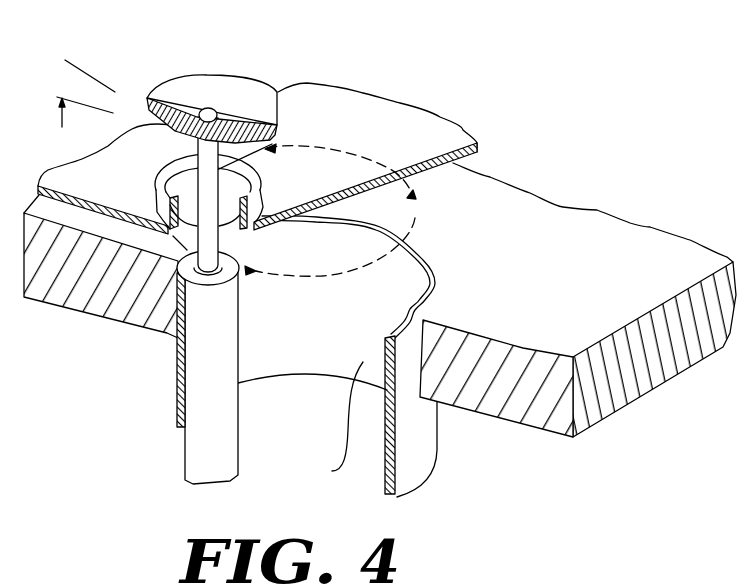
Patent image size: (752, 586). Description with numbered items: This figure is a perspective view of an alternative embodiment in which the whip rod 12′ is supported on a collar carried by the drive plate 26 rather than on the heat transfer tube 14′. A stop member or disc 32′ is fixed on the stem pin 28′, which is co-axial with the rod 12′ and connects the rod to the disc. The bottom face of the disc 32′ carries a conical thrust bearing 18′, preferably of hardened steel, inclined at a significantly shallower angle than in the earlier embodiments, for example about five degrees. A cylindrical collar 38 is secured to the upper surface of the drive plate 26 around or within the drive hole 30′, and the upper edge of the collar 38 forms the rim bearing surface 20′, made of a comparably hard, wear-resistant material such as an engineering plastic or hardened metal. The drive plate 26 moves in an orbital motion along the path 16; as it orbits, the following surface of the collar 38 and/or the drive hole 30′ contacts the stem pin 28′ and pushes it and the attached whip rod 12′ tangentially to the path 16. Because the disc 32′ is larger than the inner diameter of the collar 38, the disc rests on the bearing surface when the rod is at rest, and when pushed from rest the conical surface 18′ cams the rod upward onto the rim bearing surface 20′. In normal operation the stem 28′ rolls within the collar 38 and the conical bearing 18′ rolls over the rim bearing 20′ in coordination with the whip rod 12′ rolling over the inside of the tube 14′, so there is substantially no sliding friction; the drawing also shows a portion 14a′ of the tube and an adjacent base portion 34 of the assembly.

The whip rod 12′ is at (229, 420).
The heat transfer tube 14′ is at (432, 458).
The flexible portion of tab 14a′ is at (318, 422).
The path 16 is at (409, 232).
The conical thrust bearing 18′ is at (162, 134).
The rim bearing surface 20′ is at (258, 194).
The drive plate 26 is at (440, 130).
The stem pin 28′ is at (233, 285).
The drive hole 30′ is at (238, 240).
The stop disc 32′ is at (200, 90).
The base 34 is at (538, 217).
The cylindrical collar 38 is at (170, 200).